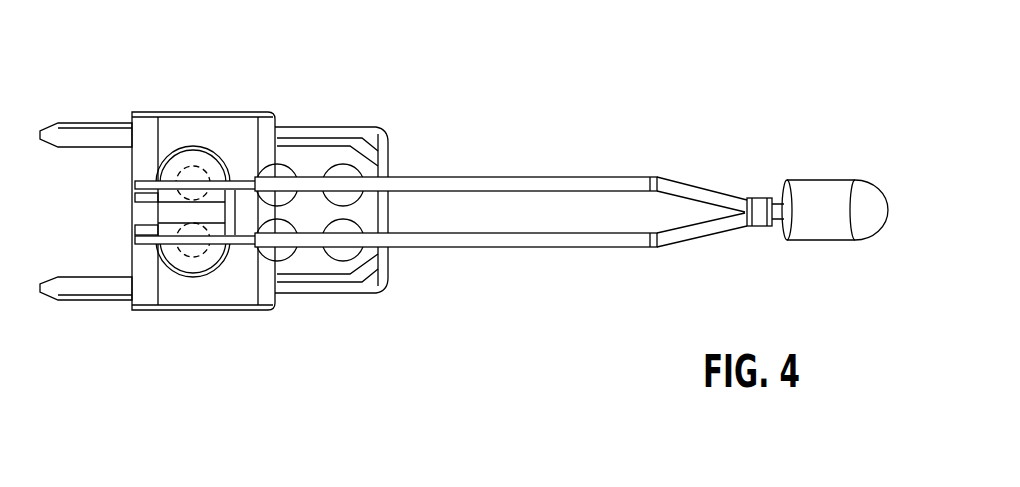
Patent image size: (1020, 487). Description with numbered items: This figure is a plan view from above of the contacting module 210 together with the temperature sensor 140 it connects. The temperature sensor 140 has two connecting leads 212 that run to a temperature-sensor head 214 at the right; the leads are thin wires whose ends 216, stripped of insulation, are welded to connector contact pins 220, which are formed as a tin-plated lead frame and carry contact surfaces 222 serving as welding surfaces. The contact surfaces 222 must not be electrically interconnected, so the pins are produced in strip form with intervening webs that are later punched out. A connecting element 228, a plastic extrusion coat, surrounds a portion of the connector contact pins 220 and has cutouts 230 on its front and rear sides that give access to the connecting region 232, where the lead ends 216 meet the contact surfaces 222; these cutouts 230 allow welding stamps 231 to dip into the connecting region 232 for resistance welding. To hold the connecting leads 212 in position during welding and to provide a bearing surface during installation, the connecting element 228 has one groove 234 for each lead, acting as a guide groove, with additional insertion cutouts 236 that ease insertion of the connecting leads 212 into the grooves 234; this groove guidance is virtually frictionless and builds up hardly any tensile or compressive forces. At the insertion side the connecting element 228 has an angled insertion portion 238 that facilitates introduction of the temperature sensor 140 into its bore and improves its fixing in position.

The temperature sensor 140 is at (735, 118).
The contacting module 210 is at (122, 90).
The connecting leads 212 is at (523, 236).
The temperature-sensor head 214 is at (842, 193).
The wire end 216 is at (243, 242).
The connector contact pins 220 is at (207, 165).
The contact surfaces 222 is at (186, 262).
The connecting element 228 is at (313, 125).
The cutouts 230 is at (257, 135).
The welding stamps 231 is at (195, 165).
The connecting region 232 is at (169, 158).
The grooves 234 is at (313, 193).
The insertion cutouts 236 is at (362, 227).
The insertion portion 238 is at (345, 138).